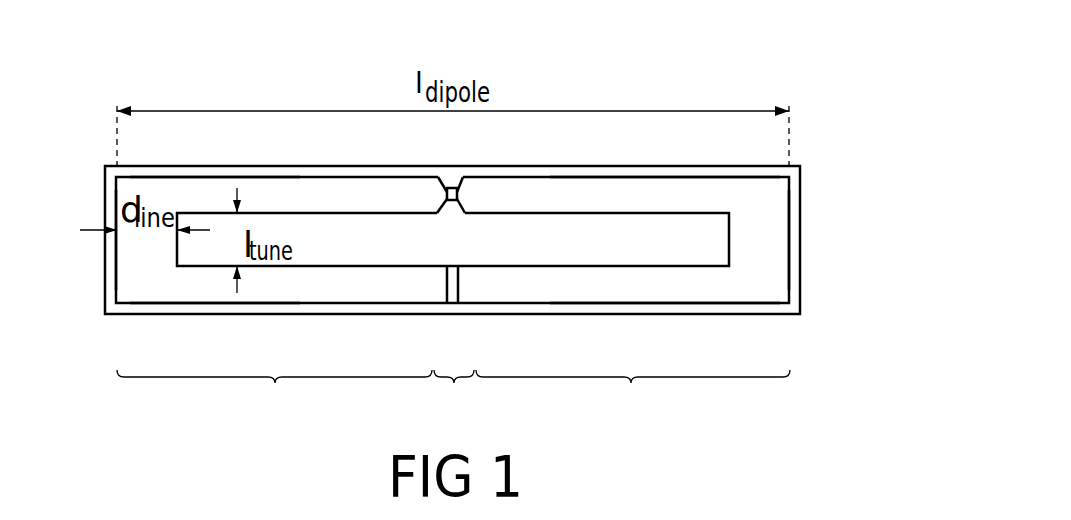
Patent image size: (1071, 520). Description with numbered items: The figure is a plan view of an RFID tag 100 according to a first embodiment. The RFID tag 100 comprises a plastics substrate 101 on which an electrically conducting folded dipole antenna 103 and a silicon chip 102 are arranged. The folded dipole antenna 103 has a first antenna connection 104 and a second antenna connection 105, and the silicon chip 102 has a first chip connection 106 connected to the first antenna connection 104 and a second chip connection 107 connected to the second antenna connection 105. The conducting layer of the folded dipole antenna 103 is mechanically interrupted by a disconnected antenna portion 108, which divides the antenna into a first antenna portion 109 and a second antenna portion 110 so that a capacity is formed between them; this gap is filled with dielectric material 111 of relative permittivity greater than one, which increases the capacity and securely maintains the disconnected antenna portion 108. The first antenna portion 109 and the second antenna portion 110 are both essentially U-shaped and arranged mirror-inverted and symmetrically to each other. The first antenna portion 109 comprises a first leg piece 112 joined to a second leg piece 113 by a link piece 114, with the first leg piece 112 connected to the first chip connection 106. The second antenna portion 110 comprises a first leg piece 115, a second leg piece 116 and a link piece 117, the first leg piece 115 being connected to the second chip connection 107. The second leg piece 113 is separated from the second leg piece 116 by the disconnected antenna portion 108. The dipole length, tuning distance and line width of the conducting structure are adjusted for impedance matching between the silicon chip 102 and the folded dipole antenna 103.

The RFID tag 100 is at (673, 84).
The plastics substrate 101 is at (798, 222).
The silicon chip 102 is at (453, 187).
The folded dipole antenna 103 is at (307, 188).
The first antenna connection 104 is at (444, 192).
The second antenna connection 105 is at (465, 193).
The first chip connection 106 is at (444, 198).
The second chip connection 107 is at (461, 198).
The disconnected antenna portion 108 is at (453, 393).
The first antenna portion 109 is at (274, 394).
The second antenna portion 110 is at (633, 393).
The dielectric material 111 is at (452, 300).
The first leg piece 112 is at (205, 188).
The second leg piece 113 is at (202, 292).
The link piece 114 is at (127, 248).
The first leg piece 115 is at (660, 180).
The second leg piece 116 is at (627, 292).
The link piece 117 is at (777, 249).